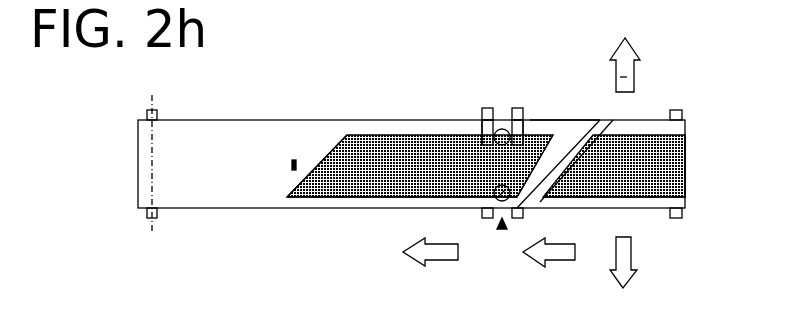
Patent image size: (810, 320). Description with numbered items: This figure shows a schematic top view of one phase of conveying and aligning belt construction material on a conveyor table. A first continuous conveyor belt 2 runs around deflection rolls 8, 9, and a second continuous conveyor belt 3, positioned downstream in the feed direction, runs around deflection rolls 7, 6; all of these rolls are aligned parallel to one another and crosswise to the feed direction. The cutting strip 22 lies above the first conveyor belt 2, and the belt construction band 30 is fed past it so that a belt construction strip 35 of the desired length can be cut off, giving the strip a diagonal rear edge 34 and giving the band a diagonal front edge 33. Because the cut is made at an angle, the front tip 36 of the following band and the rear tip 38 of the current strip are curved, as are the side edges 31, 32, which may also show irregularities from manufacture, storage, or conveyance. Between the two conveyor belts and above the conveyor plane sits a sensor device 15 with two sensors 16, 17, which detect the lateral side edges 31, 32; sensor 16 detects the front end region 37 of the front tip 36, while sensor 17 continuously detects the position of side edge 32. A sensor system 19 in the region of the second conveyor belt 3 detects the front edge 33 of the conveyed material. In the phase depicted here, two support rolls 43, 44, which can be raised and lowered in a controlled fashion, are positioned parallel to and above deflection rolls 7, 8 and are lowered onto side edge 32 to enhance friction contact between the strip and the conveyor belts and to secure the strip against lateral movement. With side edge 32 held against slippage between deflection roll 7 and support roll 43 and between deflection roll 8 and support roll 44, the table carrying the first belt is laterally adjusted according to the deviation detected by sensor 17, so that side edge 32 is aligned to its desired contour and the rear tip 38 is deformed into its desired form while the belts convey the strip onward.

The first continuous conveyor belt 2 is at (605, 200).
The second continuous conveyor belt 3 is at (193, 192).
The deflection roll 6 is at (157, 112).
The deflection roll 7 is at (484, 108).
The deflection roll 8 is at (517, 108).
The deflection roll 9 is at (682, 114).
The sensor device 15 is at (502, 229).
The sensor 16 is at (496, 210).
The sensor 17 is at (500, 129).
The sensor system 19 is at (294, 160).
The cutting strip 22 is at (612, 118).
The belt construction band 30 is at (688, 195).
The side edge 31 is at (645, 200).
The side edge 32 is at (630, 135).
The front edge 33 is at (316, 167).
The rear edge 34 is at (547, 118).
The belt construction strip 35 is at (383, 197).
The front tip 36 is at (322, 197).
The front end region 37 is at (290, 196).
The rear tip 38 is at (560, 118).
The support roll 43 is at (480, 125).
The support roll 44 is at (522, 118).